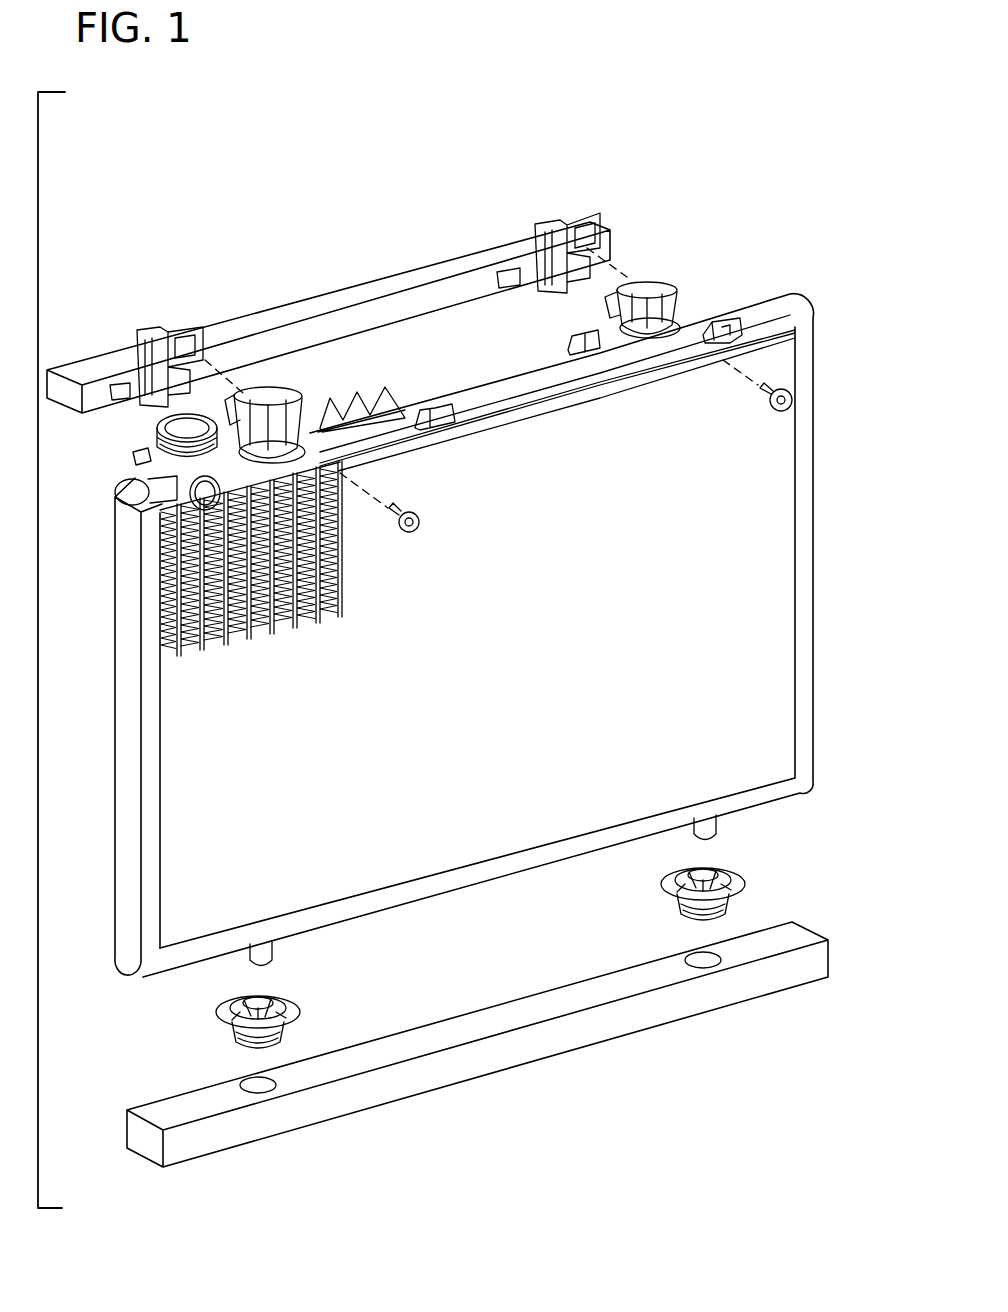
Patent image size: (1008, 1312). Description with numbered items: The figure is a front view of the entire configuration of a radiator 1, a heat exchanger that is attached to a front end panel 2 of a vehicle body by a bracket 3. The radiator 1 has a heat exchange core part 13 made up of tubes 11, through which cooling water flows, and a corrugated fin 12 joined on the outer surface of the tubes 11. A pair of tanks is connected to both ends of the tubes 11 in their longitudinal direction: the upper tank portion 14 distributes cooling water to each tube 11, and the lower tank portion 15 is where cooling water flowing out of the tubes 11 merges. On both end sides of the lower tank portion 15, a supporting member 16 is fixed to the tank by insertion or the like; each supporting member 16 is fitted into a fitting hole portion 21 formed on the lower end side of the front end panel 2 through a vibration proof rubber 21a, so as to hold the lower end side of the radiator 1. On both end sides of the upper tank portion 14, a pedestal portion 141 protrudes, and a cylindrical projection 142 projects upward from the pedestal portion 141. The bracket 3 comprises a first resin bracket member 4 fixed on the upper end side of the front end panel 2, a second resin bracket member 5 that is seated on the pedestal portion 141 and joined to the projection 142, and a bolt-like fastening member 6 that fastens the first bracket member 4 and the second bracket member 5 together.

The radiator 1 is at (484, 621).
The front end panel 2 is at (378, 262).
The bracket 3 is at (492, 317).
The first resin bracket member 4 is at (182, 327).
The second resin bracket member 5 is at (471, 300).
The fastening member 6 is at (423, 520).
The tubes 11 is at (340, 573).
The corrugated fin 12 is at (340, 616).
The heat exchange core part 13 is at (314, 558).
The upper tank portion 14 is at (760, 298).
The lower tank portion 15 is at (797, 783).
The supporting member 16 is at (247, 958).
The fitting hole portion 21 is at (262, 1090).
The vibration proof rubber 21a is at (207, 1013).
The pedestal portion 141 is at (343, 470).
The cylindrical projection 142 is at (270, 412).